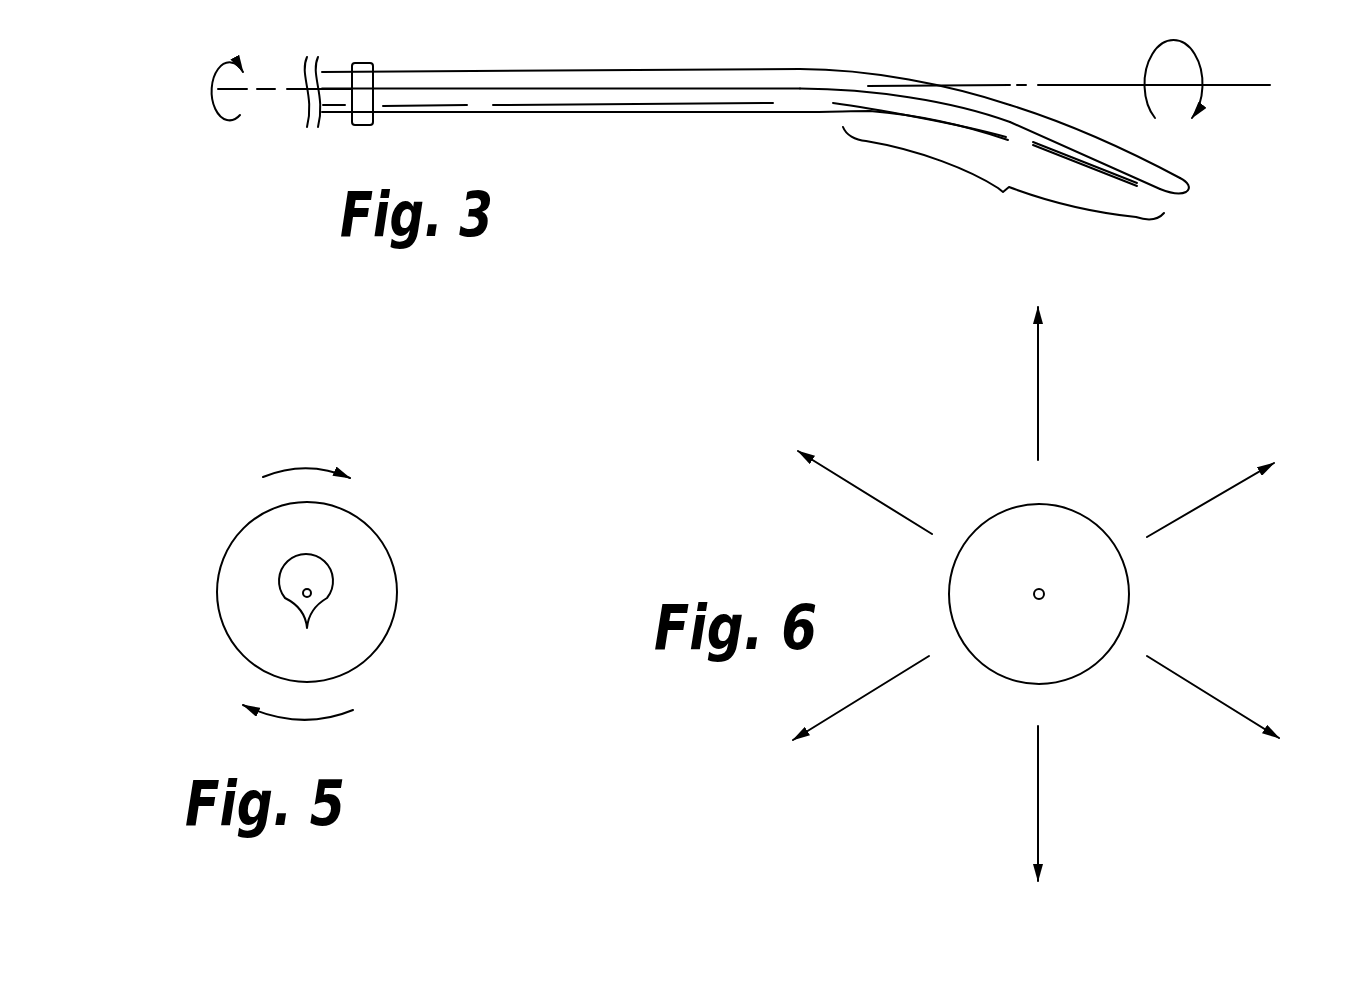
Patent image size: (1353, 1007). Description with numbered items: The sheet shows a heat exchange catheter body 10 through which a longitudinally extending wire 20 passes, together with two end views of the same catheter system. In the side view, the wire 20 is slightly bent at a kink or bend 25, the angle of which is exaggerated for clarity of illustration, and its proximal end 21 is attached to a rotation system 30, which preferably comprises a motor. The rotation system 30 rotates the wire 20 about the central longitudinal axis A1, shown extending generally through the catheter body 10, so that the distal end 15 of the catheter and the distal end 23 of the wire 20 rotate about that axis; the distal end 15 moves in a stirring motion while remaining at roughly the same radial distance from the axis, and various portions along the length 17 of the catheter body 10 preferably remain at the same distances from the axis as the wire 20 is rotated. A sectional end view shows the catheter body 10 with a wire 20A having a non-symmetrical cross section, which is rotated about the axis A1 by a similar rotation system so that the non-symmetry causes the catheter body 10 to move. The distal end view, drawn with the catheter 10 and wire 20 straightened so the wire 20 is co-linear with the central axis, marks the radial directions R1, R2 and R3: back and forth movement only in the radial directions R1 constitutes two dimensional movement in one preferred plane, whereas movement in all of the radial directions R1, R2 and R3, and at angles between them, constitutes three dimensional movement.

In FIG. 5, the heat exchange catheter body 10 is at (240, 519).
In FIG. 6, the heat exchange catheter body 10 is at (946, 611).
In FIG. 3, the distal end of catheter 15 is at (1199, 187).
In FIG. 6, the distal end of catheter 15 is at (1061, 599).
In FIG. 3, the length of catheter body 17 is at (1003, 179).
In FIG. 3, the wire 20 is at (604, 88).
In FIG. 6, the wire 20 is at (1043, 588).
In FIG. 5, the wire with non-symmetrical cross section 20A is at (284, 573).
In FIG. 3, the proximal end of wire 21 is at (375, 92).
In FIG. 3, the distal end of wire 23 is at (1080, 143).
In FIG. 3, the kink or bend 25 is at (872, 68).
In FIG. 3, the rotation system 30 is at (361, 62).
In FIG. 3, the central longitudinal axis A1 is at (746, 88).
In FIG. 5, the central longitudinal axis A1 is at (309, 591).
In FIG. 3, the radial directions R1 is at (729, 71).
In FIG. 5, the radial directions R1 is at (298, 598).
In FIG. 6, the radial directions R1 is at (1040, 377).
In FIG. 6, the radial directions R2 is at (850, 491).
In FIG. 6, the radial directions R3 is at (1226, 491).